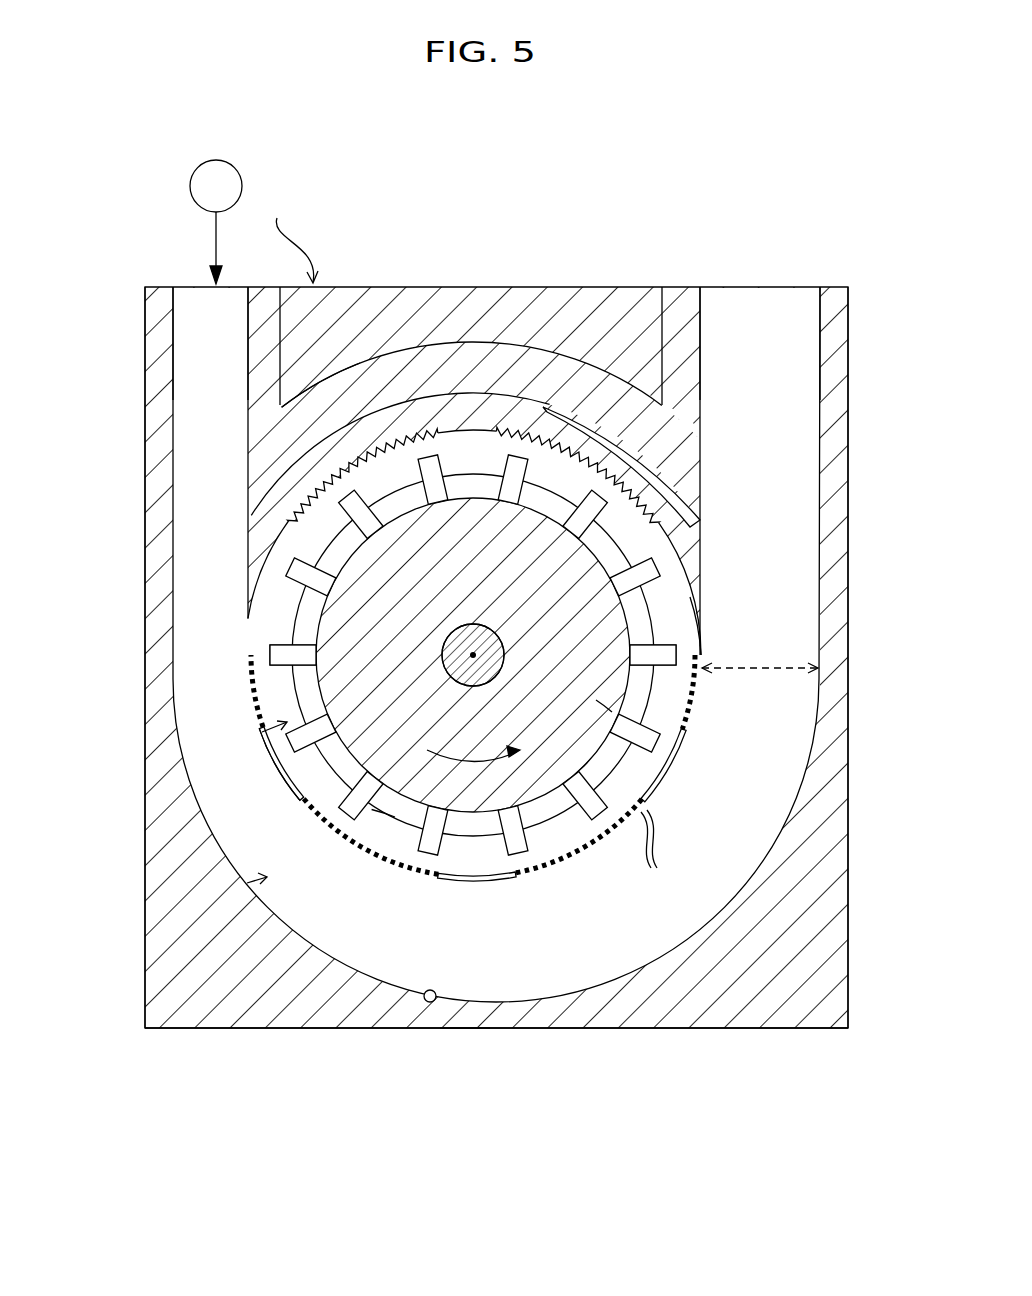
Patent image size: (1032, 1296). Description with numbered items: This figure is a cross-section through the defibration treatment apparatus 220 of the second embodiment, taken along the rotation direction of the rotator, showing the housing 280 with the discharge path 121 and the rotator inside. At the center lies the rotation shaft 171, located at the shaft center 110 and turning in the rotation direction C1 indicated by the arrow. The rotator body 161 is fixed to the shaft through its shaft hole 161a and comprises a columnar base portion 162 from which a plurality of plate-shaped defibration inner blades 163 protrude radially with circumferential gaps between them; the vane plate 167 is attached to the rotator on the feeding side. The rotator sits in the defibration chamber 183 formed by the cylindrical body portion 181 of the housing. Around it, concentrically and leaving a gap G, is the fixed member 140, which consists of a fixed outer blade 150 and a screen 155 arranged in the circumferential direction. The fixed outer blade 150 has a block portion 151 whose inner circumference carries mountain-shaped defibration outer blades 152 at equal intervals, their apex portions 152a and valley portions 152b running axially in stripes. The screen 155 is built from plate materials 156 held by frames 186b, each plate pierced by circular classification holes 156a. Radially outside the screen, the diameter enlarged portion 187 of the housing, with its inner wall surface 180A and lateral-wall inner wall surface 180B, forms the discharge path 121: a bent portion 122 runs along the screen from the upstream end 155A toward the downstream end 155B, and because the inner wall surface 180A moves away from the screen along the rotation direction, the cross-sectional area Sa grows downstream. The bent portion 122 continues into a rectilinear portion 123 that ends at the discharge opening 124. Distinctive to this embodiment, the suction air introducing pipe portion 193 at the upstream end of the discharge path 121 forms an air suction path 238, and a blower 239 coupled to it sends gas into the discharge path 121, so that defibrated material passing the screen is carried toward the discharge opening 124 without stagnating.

The shaft center 110 is at (443, 662).
The discharge path 121 is at (172, 952).
The bent portion 122 is at (547, 985).
The rectilinear portion 123 is at (797, 377).
The discharge opening 124 is at (812, 283).
The fixed member 140 is at (80, 573).
The fixed outer blade 150 is at (290, 566).
The block portion 151 is at (543, 408).
The defibration outer blades 152 is at (405, 440).
The apex portions 152a is at (520, 430).
The valley portions 152b is at (368, 426).
The screen 155 is at (257, 705).
The upstream end 155A is at (313, 638).
The downstream end 155B is at (705, 658).
The plate materials 156 is at (260, 725).
The classification holes 156a is at (665, 854).
The rotator body 161 is at (632, 777).
The shaft hole 161a is at (497, 680).
The base portion 162 is at (605, 702).
The defibration inner blades 163 is at (345, 466).
The vane plate 167 is at (393, 816).
The rotation shaft 171 is at (490, 636).
The inner wall surface 180A is at (430, 1002).
The lateral-wall inner wall surface 180B is at (621, 925).
The body portion 181 is at (467, 357).
The defibration chamber 183 is at (297, 806).
The frames 186b is at (673, 767).
The diameter enlarged portion 187 is at (463, 1022).
The suction air introducing pipe portion 193 is at (151, 417).
The defibration treatment apparatus 220 is at (286, 236).
The air suction path 238 is at (180, 310).
The blower 239 is at (222, 170).
The housing 280 is at (359, 364).
The gap G is at (433, 449).
The rotation direction C1 is at (477, 762).
The cross-sectional area Sa is at (772, 668).